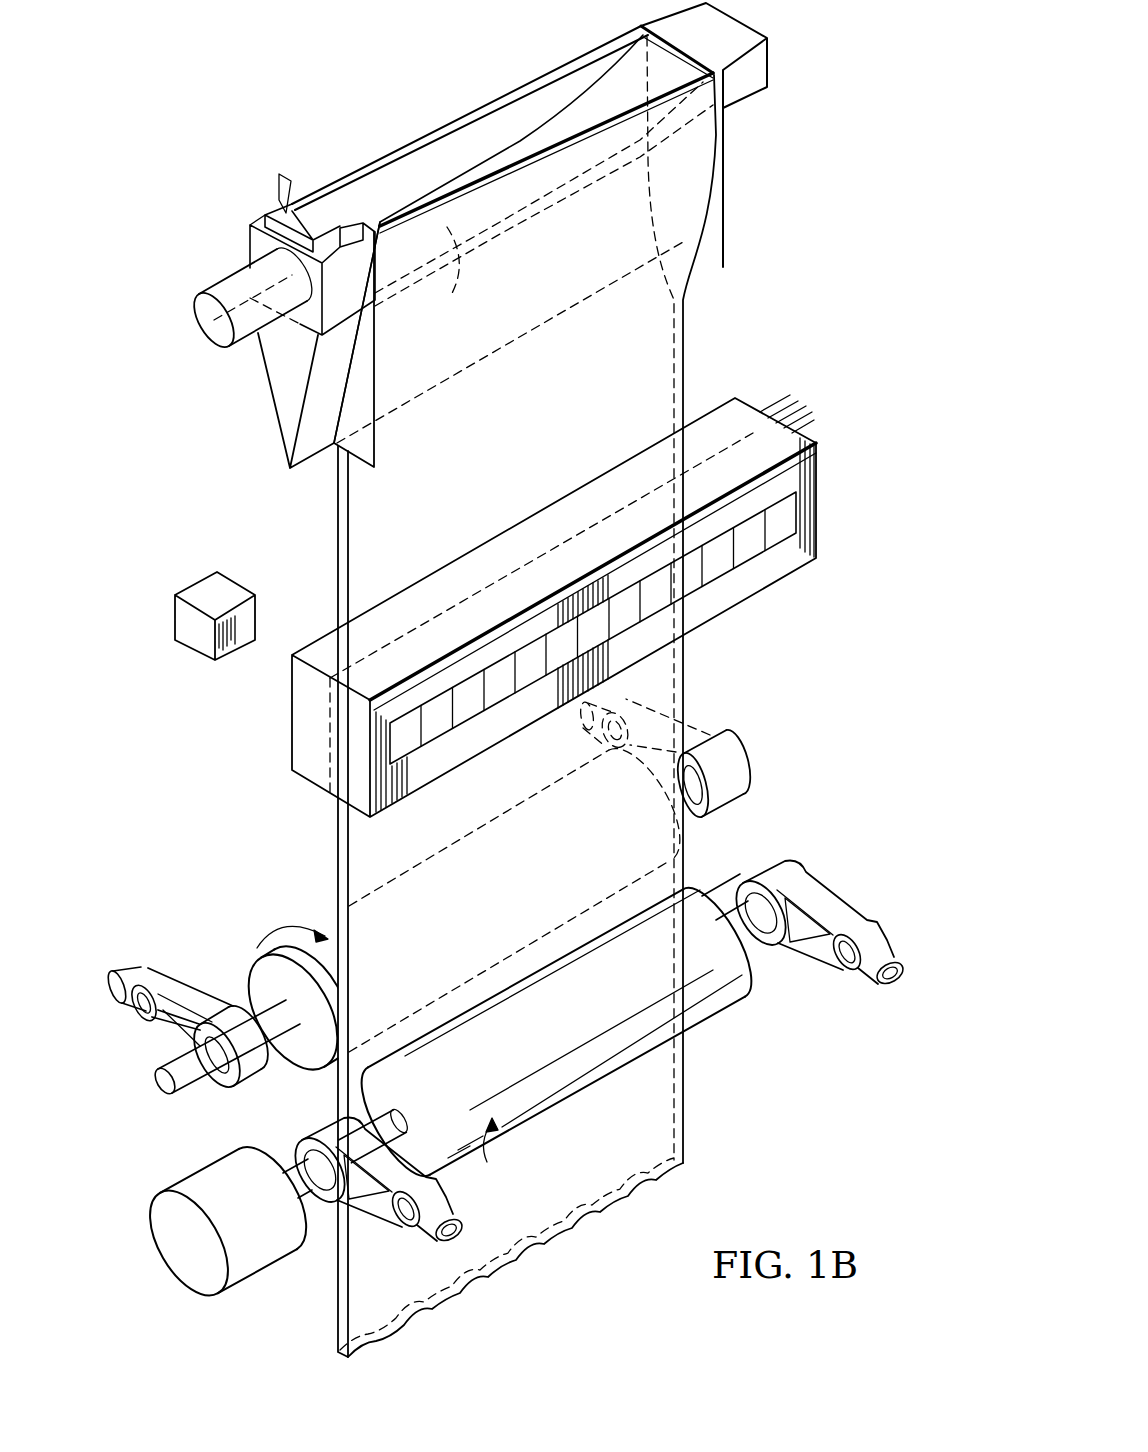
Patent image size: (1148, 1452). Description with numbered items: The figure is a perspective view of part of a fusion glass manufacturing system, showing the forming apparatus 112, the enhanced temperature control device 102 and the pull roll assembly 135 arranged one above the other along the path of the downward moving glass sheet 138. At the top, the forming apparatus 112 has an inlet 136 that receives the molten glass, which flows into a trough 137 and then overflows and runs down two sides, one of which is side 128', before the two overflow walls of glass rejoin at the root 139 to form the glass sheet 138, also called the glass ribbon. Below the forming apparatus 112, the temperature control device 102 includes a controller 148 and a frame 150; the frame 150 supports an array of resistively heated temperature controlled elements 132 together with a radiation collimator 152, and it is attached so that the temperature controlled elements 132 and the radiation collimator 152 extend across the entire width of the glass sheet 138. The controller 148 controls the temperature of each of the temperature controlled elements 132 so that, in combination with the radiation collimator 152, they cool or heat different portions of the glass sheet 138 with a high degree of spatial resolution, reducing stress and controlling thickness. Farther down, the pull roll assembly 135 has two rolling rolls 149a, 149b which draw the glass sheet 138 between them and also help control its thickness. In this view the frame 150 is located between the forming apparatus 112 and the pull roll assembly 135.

The forming apparatus 112 is at (398, 100).
The inlet 136 is at (213, 322).
The side 128' is at (326, 382).
The trough 137 is at (450, 280).
The root 139 is at (518, 334).
The glass sheet 138 is at (685, 330).
The frame 150 is at (748, 410).
The temperature control device 102 is at (322, 630).
The controller 148 is at (190, 650).
The temperature controlled elements 132 is at (778, 536).
The radiation collimator 152 is at (327, 760).
The rolling roll 149a is at (804, 867).
The rolling roll 149b is at (726, 737).
The pull roll assembly 135 is at (854, 742).